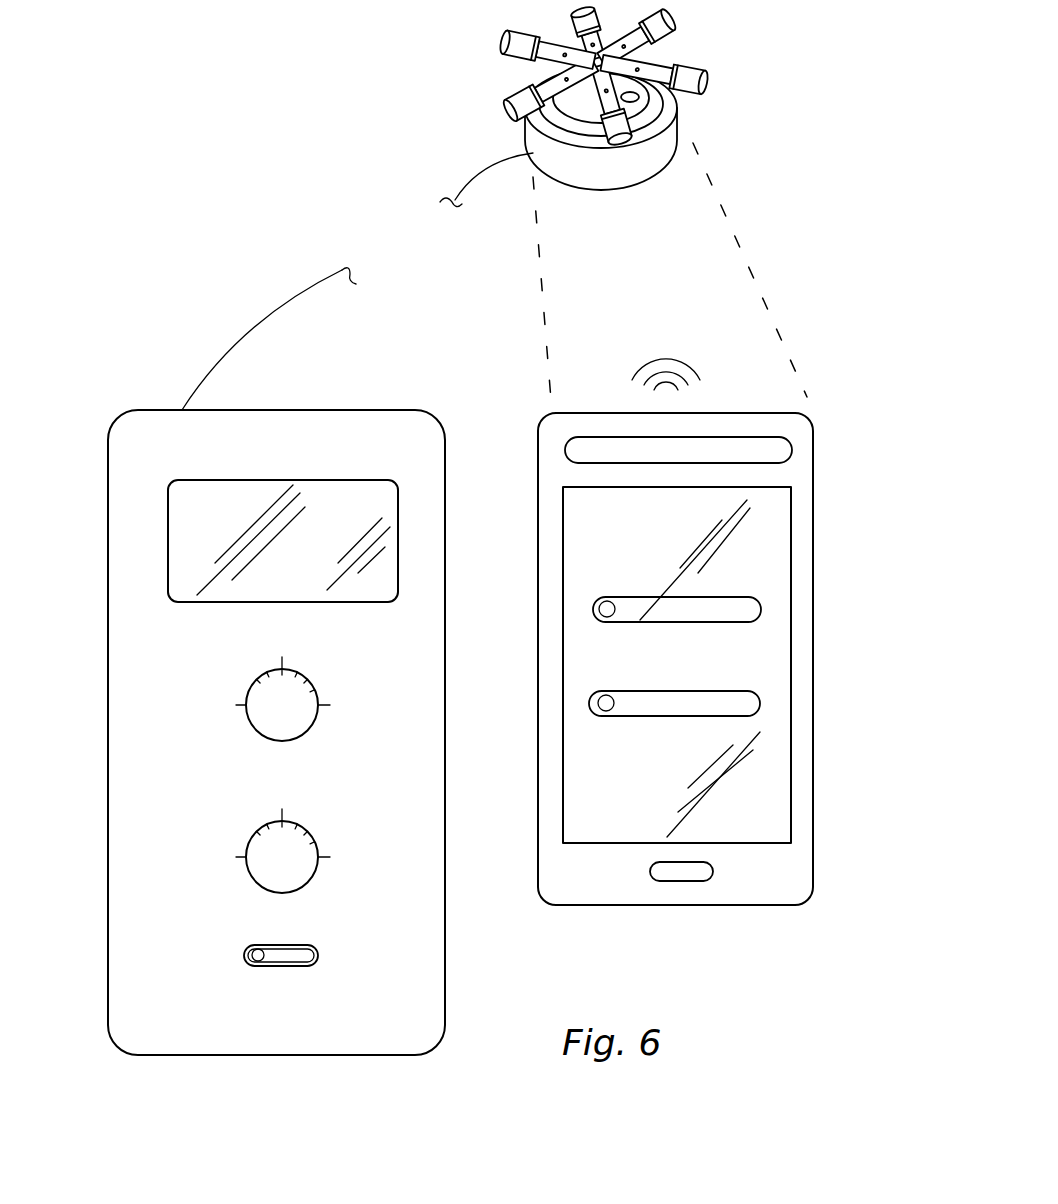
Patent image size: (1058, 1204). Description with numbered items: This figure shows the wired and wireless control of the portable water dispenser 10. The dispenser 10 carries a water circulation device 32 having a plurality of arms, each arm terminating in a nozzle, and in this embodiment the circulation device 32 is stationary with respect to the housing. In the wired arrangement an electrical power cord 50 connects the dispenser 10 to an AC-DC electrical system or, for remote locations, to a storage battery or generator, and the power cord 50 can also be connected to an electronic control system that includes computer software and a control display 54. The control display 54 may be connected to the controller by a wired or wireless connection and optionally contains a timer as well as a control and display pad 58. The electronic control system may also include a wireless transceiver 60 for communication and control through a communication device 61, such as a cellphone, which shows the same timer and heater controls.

The dispenser 10 is at (636, 97).
The water circulation device 32 is at (633, 82).
The electrical power cord 50 is at (458, 204).
The control display 54 is at (448, 681).
The control and display pad 58 is at (302, 543).
The wireless transceiver 60 is at (645, 365).
The communication device 61 is at (665, 651).